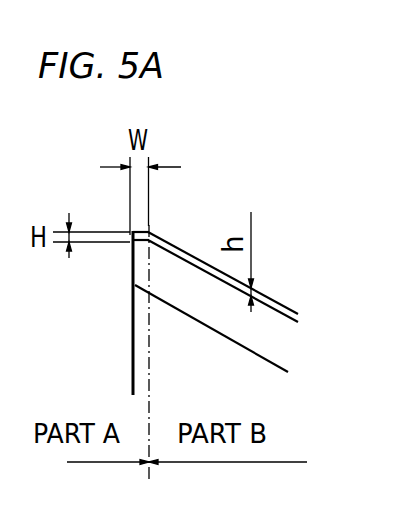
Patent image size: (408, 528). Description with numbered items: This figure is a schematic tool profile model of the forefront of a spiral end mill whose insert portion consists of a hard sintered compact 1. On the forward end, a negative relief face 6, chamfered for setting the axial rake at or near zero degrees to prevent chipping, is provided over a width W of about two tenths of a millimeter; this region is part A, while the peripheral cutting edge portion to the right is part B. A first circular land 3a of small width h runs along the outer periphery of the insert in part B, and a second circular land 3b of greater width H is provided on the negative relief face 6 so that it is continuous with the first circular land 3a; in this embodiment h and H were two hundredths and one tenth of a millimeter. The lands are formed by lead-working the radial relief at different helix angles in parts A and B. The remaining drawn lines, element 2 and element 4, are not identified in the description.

The hard sintered compact 1 is at (283, 305).
The thick base portion 2 is at (135, 335).
The first circular land 3a is at (190, 252).
The second circular land 3b is at (149, 231).
The lower plate 4 is at (270, 348).
The negative relief face 6 is at (142, 229).